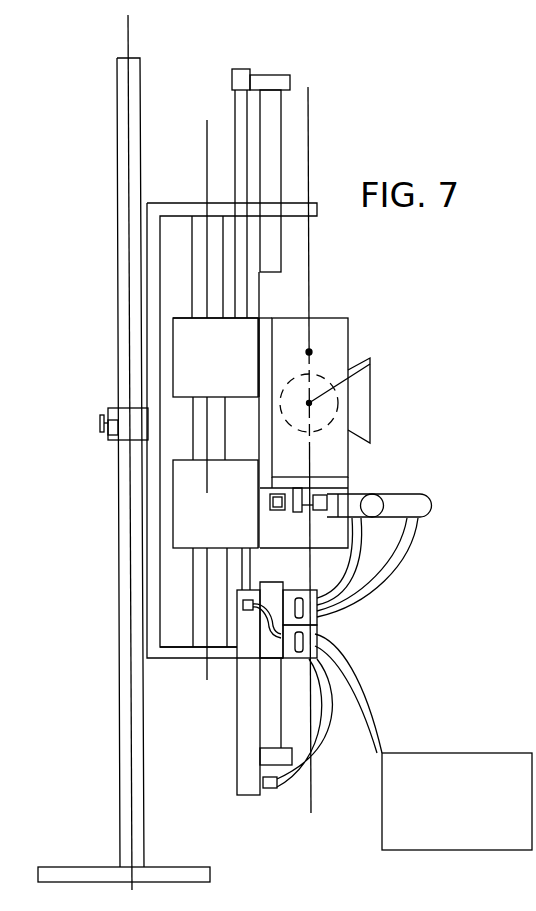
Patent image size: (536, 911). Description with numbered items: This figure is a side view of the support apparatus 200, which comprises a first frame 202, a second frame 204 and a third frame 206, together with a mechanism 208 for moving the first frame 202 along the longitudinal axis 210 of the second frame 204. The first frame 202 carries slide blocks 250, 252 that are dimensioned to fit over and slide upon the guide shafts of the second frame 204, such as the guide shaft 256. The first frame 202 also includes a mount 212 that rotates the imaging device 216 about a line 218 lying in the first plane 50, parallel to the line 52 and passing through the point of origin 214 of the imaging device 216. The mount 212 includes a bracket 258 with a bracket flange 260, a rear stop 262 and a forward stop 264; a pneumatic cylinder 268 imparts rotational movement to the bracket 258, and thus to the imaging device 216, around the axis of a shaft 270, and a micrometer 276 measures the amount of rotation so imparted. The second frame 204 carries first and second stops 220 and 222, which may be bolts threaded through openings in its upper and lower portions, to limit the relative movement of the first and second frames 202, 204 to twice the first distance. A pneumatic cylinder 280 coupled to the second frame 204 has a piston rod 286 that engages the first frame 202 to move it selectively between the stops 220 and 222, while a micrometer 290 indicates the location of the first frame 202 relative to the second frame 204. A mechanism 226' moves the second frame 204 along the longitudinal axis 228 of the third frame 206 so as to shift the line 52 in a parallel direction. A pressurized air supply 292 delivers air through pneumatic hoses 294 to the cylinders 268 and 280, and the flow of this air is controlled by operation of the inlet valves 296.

The support apparatus 200 is at (98, 117).
The first plane 50 is at (310, 133).
The line 52 is at (324, 350).
The first frame 202 is at (180, 327).
The second frame 204 is at (153, 250).
The third frame 206 is at (117, 169).
The mechanism for moving first frame 208 is at (238, 572).
The longitudinal axis of second frame 210 is at (207, 172).
The mount 212 is at (355, 481).
The point of origin of imaging device 214 is at (309, 403).
The imaging device 216 is at (320, 318).
The line 218 is at (370, 364).
The first stop 220 is at (282, 238).
The second stop 222 is at (272, 706).
The mechanism for moving second frame 226' is at (96, 424).
The longitudinal axis of third frame 228 is at (128, 38).
The slide block 250 is at (180, 376).
The slide block 252 is at (187, 490).
The guide shaft 256 is at (191, 240).
The bracket 258 is at (263, 318).
The bracket flange 260 is at (291, 512).
The rear stop 262 is at (270, 505).
The forward stop 264 is at (320, 511).
The pneumatic cylinder 268 is at (432, 503).
The shaft 270 is at (320, 428).
The micrometer 276 is at (378, 520).
The pneumatic cylinder 280 is at (248, 746).
The piston rod 286 is at (242, 559).
The micrometer 290 is at (231, 70).
The pressurized air supply 292 is at (455, 752).
The pneumatic hoses 294 is at (350, 626).
The inlet valves 296 is at (318, 623).